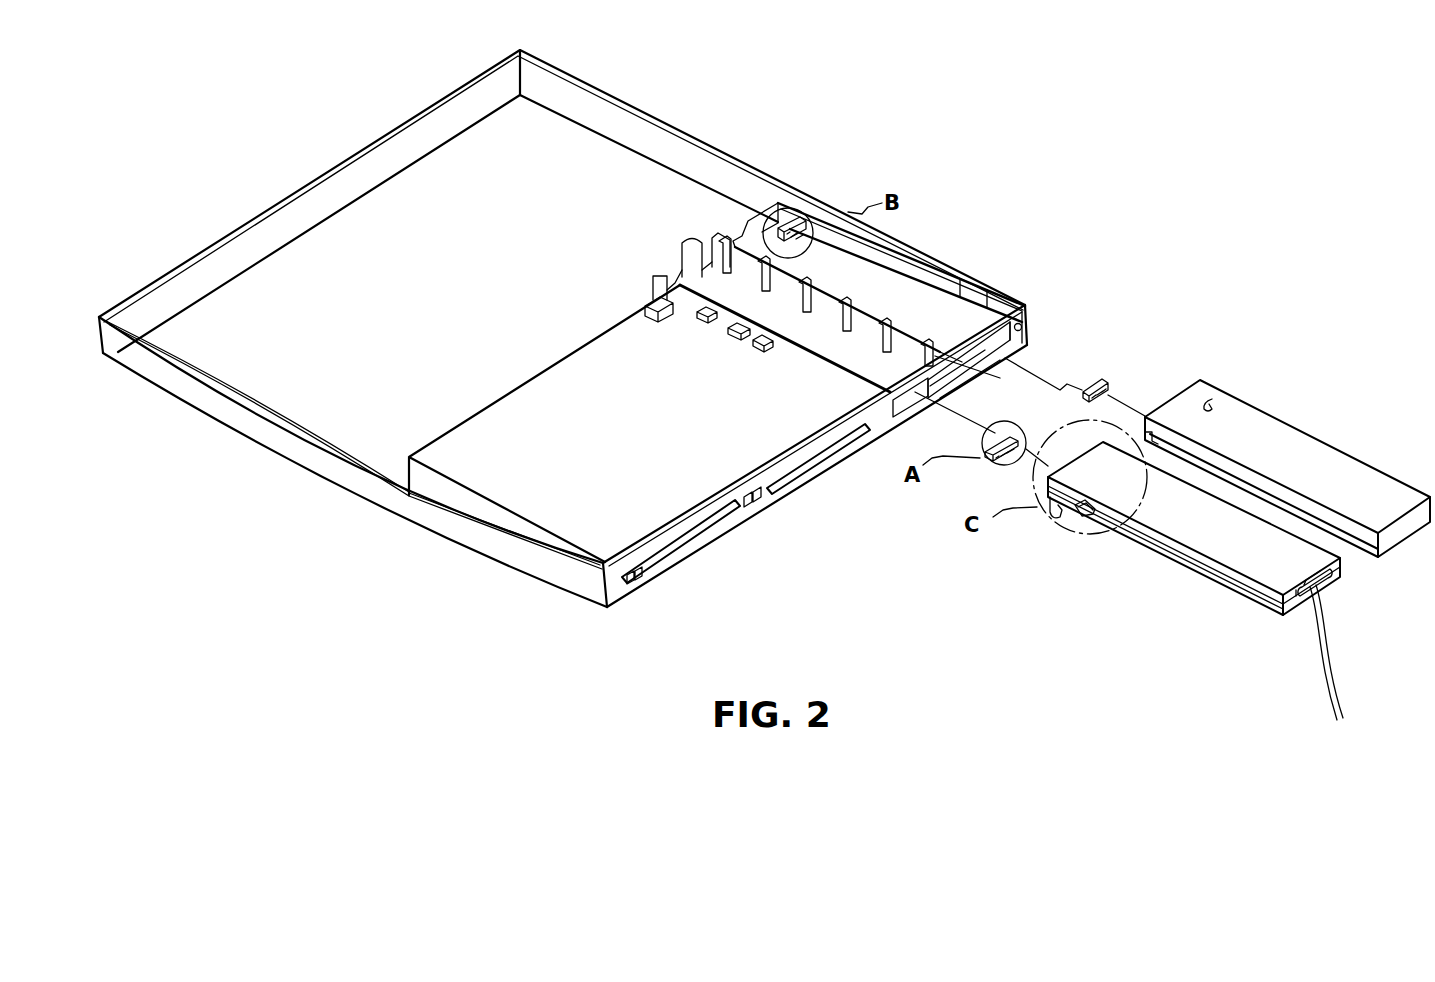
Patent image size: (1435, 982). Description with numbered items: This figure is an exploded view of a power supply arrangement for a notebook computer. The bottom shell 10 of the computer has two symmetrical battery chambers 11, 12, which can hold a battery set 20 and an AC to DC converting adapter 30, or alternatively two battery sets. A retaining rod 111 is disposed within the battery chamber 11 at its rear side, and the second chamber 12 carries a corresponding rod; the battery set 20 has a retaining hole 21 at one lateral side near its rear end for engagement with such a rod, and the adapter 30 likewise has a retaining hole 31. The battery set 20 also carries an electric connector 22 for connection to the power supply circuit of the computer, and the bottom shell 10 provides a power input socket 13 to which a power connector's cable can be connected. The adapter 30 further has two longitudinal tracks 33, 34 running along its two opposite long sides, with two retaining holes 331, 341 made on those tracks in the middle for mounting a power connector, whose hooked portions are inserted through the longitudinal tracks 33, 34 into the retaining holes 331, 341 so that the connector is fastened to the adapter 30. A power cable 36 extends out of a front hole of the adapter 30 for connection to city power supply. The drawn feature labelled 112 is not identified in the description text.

The bottom shell 10 is at (656, 116).
The battery chamber 11 is at (887, 298).
The retaining rod 111 is at (808, 205).
The connector block 112 is at (650, 298).
The battery chamber 12 is at (843, 353).
The power input socket 13 is at (1023, 325).
The battery set 20 is at (1288, 453).
The retaining hole 21 is at (1220, 393).
The electric connector 22 is at (1108, 382).
The AC to DC converting adapter 30 is at (1218, 548).
The retaining hole 31 is at (1060, 508).
The longitudinal track 33 is at (1258, 597).
The retaining hole 331 is at (1103, 520).
The retaining hole 341 is at (1100, 561).
The longitudinal track 34 is at (1340, 577).
The power cable 36 is at (1318, 655).